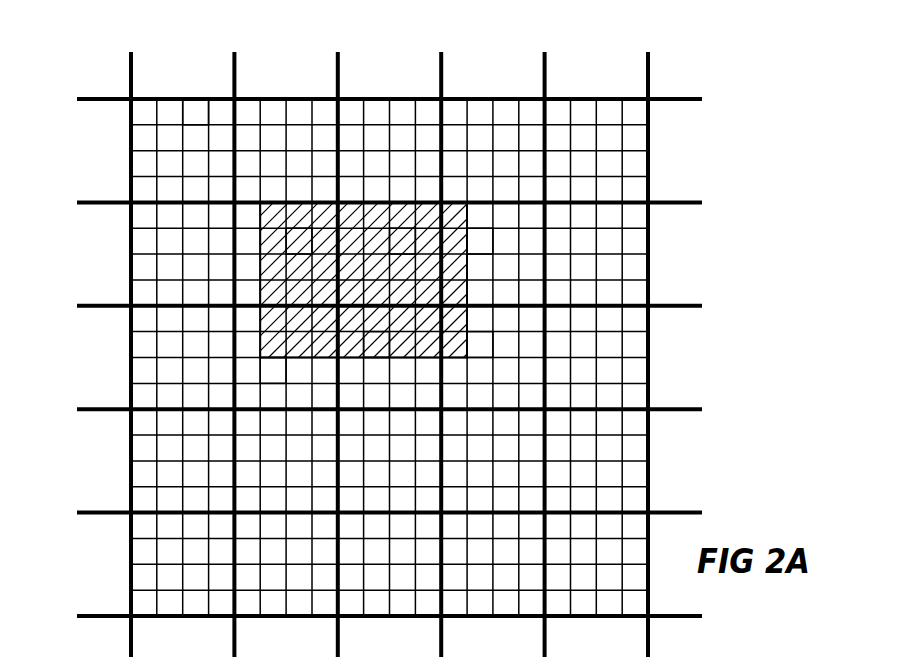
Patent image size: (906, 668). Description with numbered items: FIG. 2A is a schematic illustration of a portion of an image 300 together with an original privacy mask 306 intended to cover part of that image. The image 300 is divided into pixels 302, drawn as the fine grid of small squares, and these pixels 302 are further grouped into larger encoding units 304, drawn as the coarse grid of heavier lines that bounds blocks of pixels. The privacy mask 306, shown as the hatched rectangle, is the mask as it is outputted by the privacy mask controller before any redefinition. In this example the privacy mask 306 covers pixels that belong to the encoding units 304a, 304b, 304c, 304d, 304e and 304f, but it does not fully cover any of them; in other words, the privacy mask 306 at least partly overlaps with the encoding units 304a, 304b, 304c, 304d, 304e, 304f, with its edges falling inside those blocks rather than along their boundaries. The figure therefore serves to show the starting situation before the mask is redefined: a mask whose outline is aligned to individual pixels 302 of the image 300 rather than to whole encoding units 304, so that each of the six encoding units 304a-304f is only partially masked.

The image 300 is at (386, 334).
The pixels 302 is at (142, 112).
The encoding units 304 is at (197, 121).
The encoding unit 304a is at (295, 252).
The encoding unit 304b is at (393, 253).
The encoding unit 304c is at (483, 242).
The encoding unit 304d is at (274, 368).
The encoding unit 304e is at (369, 352).
The encoding unit 304f is at (479, 350).
The privacy mask 306 is at (284, 296).